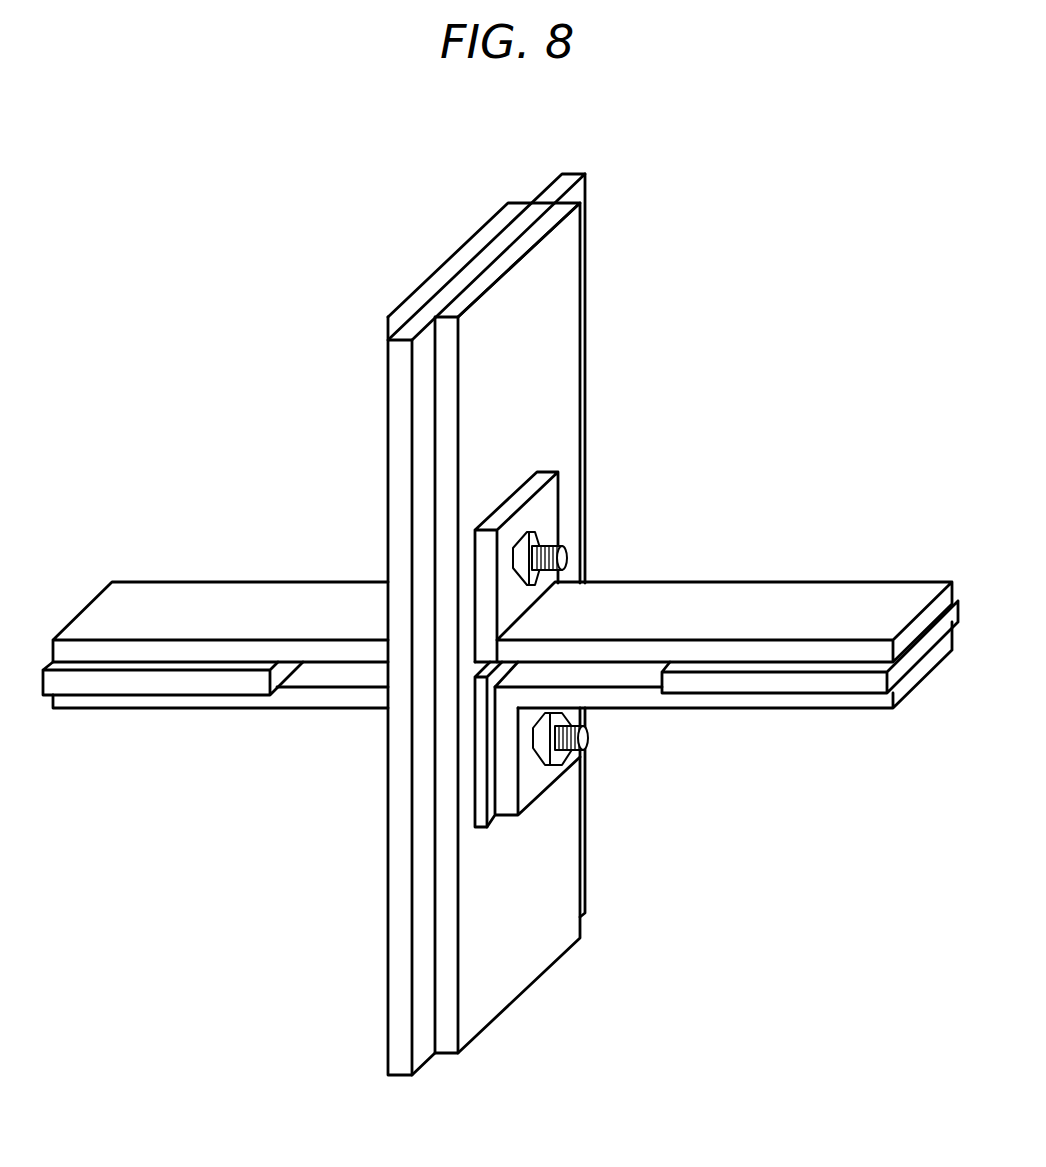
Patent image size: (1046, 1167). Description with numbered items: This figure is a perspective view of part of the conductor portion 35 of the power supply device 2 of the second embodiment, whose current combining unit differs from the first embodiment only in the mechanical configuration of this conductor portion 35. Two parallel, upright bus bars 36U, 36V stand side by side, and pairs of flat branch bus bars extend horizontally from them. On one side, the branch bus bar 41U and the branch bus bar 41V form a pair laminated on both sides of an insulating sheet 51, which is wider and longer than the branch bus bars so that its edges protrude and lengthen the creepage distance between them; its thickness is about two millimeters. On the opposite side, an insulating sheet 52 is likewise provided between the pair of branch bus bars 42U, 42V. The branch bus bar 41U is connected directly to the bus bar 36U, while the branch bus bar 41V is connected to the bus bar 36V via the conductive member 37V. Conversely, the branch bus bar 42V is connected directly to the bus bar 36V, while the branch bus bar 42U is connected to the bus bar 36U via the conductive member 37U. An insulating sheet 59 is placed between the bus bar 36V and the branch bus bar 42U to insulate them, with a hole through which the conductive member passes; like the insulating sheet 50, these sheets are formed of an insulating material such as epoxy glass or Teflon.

The power supply device 2 is at (798, 200).
The conductor portion 35 is at (642, 368).
The bus bar 36U is at (442, 277).
The bus bar 36V is at (557, 268).
The conductive member 37U is at (590, 742).
The conductive member 37V is at (565, 558).
The branch bus bar 41U is at (218, 698).
The branch bus bar 41V is at (225, 600).
The branch bus bar 42U is at (710, 698).
The branch bus bar 42V is at (762, 600).
The insulating sheet 50 is at (568, 179).
The insulating sheet 51 is at (140, 686).
The insulating sheet 52 is at (784, 684).
The insulating sheet 59 is at (479, 815).